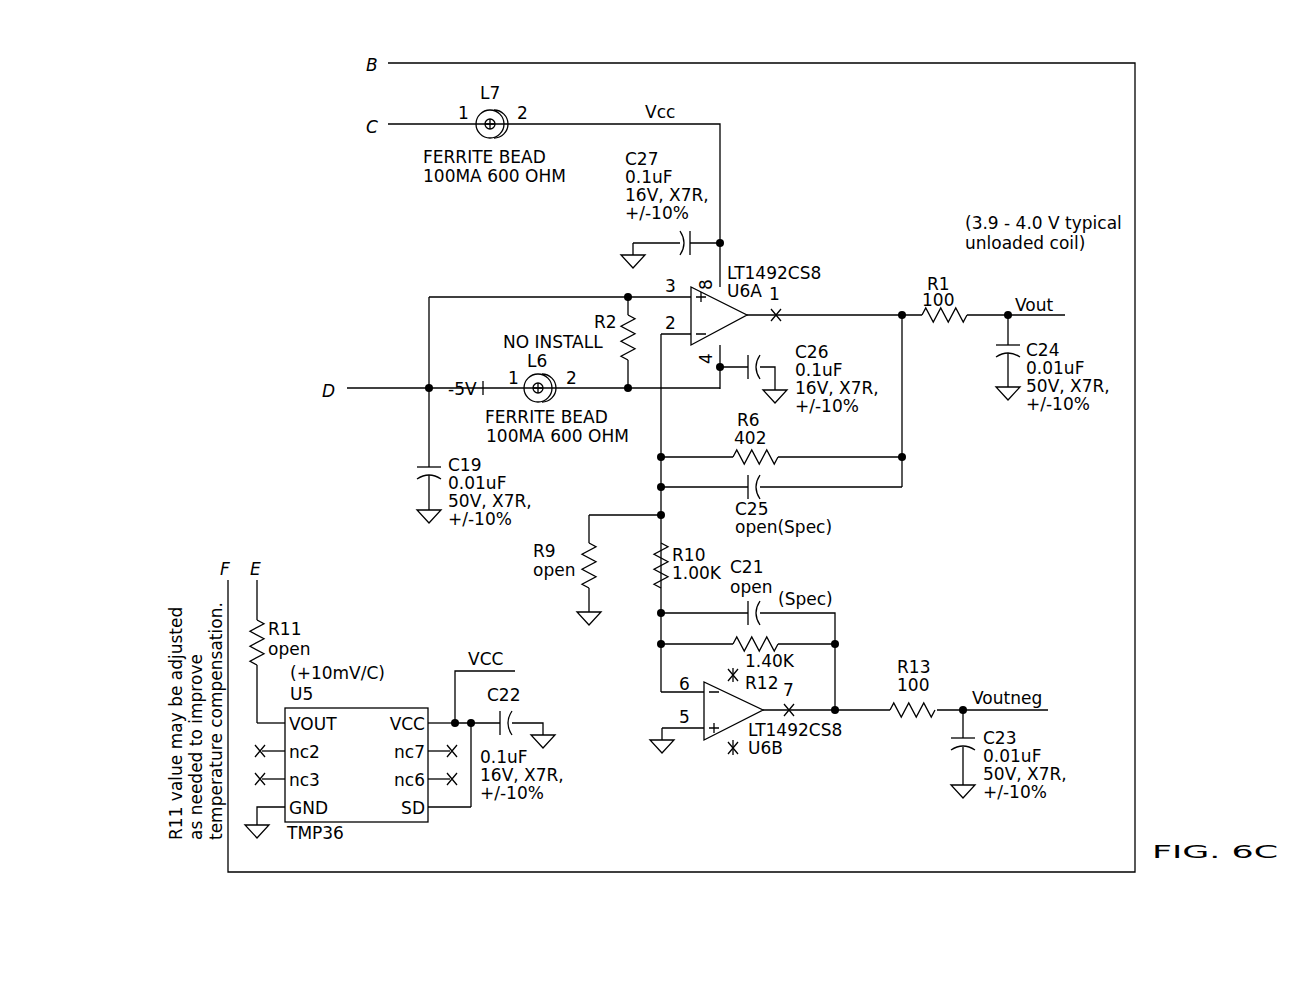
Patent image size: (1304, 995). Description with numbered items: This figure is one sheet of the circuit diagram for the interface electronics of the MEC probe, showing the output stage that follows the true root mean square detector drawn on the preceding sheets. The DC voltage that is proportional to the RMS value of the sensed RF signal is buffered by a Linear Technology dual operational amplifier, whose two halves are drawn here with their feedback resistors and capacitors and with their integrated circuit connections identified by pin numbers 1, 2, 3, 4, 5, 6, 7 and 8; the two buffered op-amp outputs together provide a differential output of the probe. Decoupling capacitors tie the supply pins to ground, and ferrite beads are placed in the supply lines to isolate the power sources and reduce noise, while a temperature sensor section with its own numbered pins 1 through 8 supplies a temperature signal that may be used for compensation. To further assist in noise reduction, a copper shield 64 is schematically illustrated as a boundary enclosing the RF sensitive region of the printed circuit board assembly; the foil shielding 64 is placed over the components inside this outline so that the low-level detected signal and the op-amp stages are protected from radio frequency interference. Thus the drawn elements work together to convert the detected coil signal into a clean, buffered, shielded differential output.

The bottom foil shielding region 64 is at (1104, 63).
The U5 pin 1 VOUT 1 is at (271, 715).
The U5 pin 2 nc2 2 is at (270, 745).
The U5 pin 3 nc3 3 is at (270, 773).
The U5 pin 4 GND 4 is at (265, 813).
The U5 pin 5 SD 5 is at (449, 799).
The U5 pin 6 nc6 6 is at (442, 773).
The U5 pin 7 nc7 7 is at (442, 745).
The U5 pin 8 VCC 8 is at (441, 715).